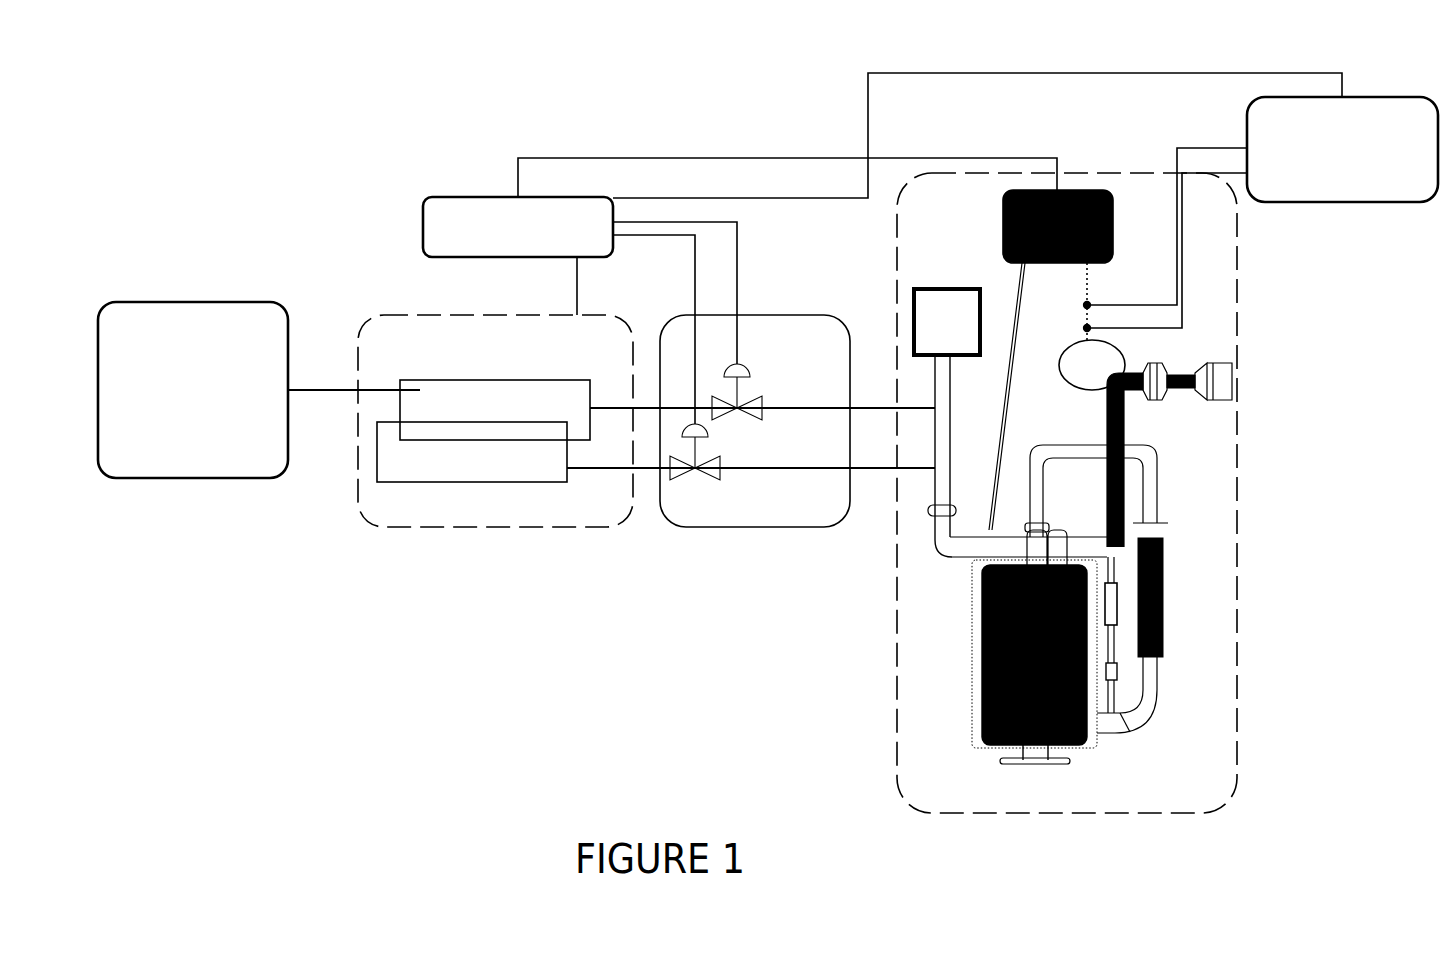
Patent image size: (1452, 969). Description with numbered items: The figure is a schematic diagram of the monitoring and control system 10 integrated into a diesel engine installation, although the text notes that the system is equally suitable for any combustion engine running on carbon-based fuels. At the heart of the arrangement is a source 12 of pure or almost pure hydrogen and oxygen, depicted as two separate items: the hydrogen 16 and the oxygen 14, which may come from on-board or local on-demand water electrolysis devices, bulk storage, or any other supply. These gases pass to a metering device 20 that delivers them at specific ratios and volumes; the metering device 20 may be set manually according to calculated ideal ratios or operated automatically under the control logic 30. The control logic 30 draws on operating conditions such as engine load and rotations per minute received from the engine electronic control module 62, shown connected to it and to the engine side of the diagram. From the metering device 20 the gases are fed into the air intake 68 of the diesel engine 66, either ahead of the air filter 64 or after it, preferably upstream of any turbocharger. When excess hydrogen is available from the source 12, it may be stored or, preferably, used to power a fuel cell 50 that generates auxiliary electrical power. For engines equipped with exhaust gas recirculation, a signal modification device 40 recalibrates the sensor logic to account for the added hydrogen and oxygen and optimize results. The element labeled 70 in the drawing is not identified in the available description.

The monitoring and control system 10 is at (343, 250).
The source 12 is at (525, 530).
The oxygen 14 is at (407, 483).
The hydrogen 16 is at (420, 378).
The metering device 20 is at (722, 530).
The control logic 30 is at (457, 197).
The signal modification device 40 is at (1323, 202).
The fuel cell 50 is at (192, 477).
The engine electronic control module 62 is at (1047, 190).
The air filter 64 is at (952, 287).
The diesel engine 66 is at (982, 718).
The air intake 68 is at (935, 470).
The flow valve 70 is at (1113, 667).